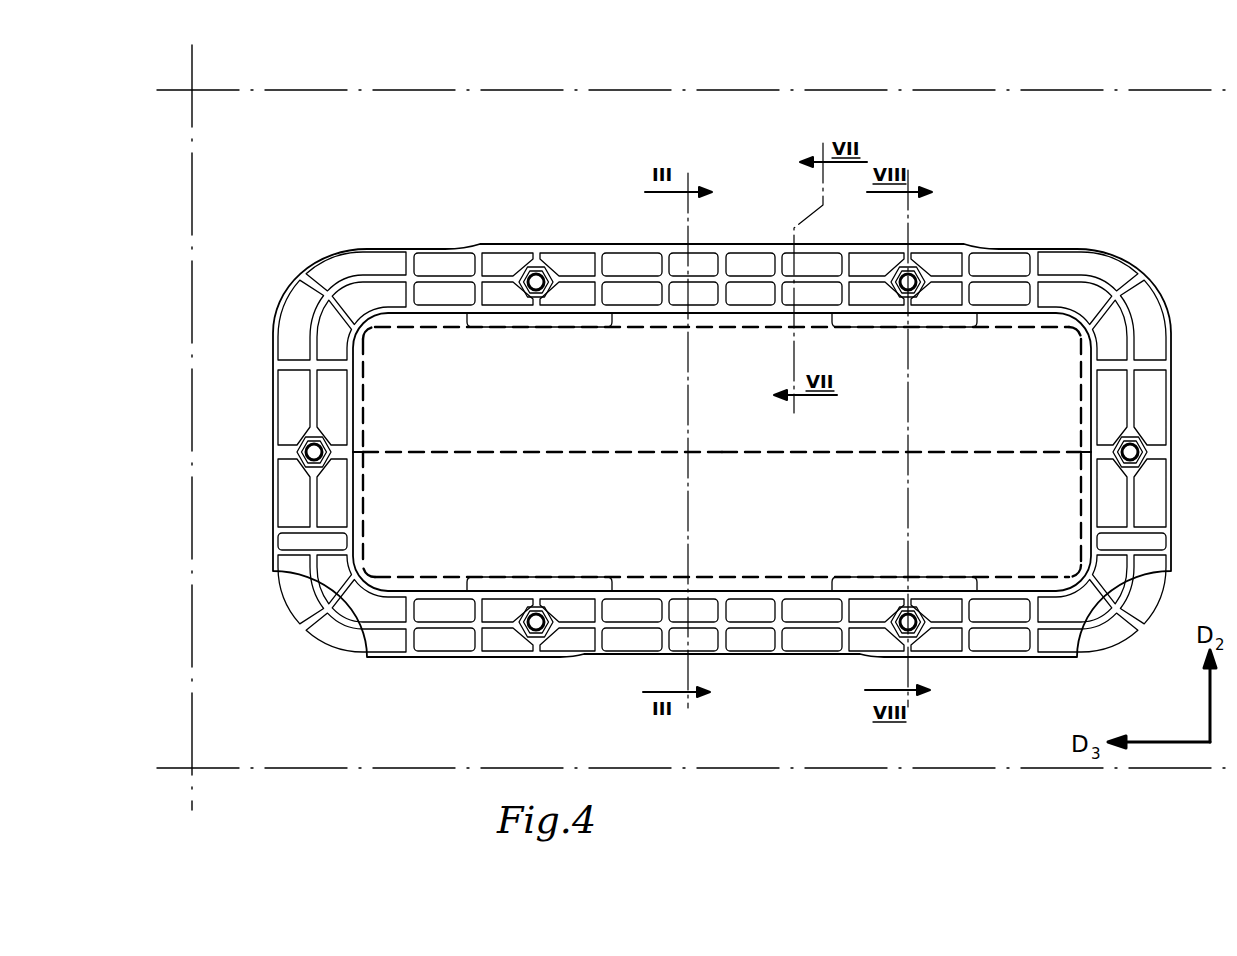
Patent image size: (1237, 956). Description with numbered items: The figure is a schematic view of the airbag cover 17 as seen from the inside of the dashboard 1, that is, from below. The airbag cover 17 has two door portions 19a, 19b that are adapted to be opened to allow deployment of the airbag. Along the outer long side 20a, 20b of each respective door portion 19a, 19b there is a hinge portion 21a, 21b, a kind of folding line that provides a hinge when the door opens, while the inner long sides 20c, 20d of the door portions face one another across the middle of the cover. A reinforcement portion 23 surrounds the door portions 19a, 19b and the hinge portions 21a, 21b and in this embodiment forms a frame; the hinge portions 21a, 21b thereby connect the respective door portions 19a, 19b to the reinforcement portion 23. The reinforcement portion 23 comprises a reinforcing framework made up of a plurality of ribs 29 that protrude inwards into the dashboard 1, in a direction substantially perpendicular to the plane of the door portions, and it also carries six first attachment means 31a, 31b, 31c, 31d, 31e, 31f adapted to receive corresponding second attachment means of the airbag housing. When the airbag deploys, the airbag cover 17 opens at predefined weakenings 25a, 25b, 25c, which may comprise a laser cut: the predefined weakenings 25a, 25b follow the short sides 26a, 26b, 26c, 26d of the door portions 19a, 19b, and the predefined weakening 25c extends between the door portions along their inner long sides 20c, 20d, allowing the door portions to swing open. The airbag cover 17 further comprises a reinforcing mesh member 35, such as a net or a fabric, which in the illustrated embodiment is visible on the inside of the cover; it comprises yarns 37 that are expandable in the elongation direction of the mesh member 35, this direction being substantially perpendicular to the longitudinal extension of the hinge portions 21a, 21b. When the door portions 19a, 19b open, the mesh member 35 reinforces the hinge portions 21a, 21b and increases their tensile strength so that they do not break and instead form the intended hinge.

The dashboard 1 is at (316, 213).
The airbag cover 17 is at (1078, 183).
The door portion 19a is at (1072, 403).
The door portion 19b is at (1072, 501).
The outer long side 20a is at (570, 340).
The outer long side 20b is at (572, 585).
The inner long side 20c is at (546, 452).
The inner long side 20d is at (585, 453).
The hinge portion 21a is at (1043, 317).
The hinge portion 21b is at (1045, 585).
The reinforcement portion 23 is at (1174, 310).
The predefined weakening 25a is at (1080, 475).
The predefined weakening 25b is at (363, 468).
The predefined weakening 25c is at (385, 452).
The short side 26a is at (1080, 370).
The short side 26b is at (365, 390).
The short side 26c is at (1080, 540).
The short side 26d is at (363, 520).
The ribs 29 is at (650, 310).
The first attachment means 31a is at (527, 268).
The first attachment means 31b is at (897, 270).
The first attachment means 31c is at (532, 631).
The first attachment means 31d is at (895, 628).
The first attachment means 31e is at (305, 455).
The first attachment means 31f is at (1140, 443).
The reinforcing mesh member 35 is at (1045, 553).
The yarns 37 is at (761, 343).